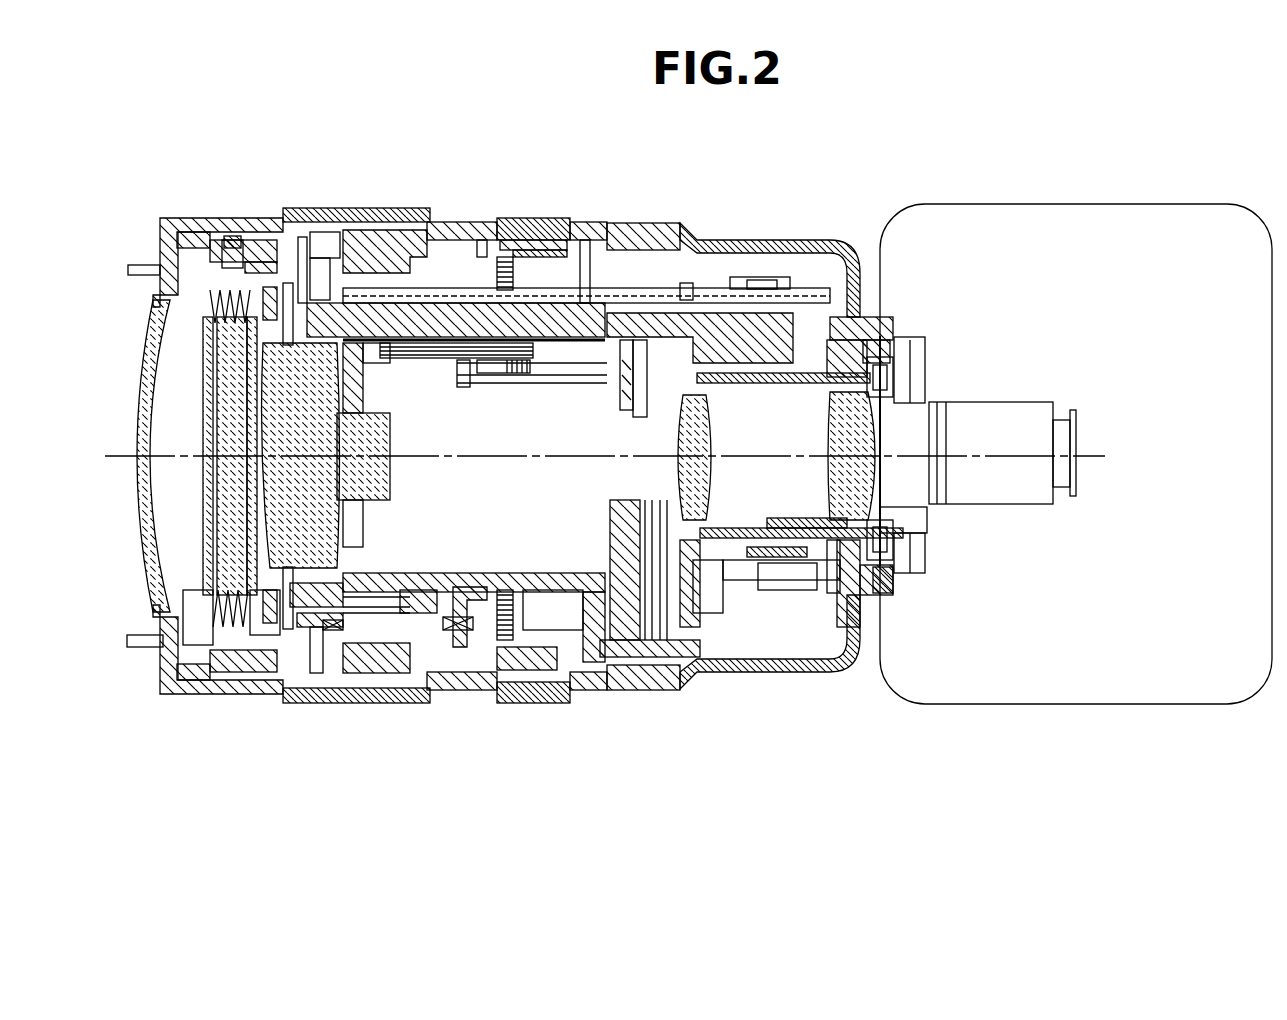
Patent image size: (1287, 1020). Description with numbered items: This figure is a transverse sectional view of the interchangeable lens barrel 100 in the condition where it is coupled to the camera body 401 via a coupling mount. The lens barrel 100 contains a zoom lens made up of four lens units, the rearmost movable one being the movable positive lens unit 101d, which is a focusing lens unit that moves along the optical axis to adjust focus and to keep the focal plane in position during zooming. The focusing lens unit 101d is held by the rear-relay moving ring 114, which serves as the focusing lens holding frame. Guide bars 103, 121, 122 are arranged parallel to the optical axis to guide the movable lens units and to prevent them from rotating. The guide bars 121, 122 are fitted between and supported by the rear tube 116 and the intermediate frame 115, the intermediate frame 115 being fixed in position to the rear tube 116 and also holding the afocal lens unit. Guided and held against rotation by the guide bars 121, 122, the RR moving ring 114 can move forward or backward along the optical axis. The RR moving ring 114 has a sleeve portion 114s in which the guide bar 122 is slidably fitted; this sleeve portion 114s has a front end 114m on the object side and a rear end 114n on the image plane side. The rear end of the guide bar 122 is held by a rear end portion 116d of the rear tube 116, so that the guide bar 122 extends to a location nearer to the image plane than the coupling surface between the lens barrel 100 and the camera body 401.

The lens barrel 100 is at (328, 738).
The movable positive lens unit 101d is at (882, 431).
The guide bar 103 is at (583, 350).
The rear-relay (RR) moving ring 114 is at (842, 390).
The front end 114m is at (768, 593).
The rear end 114n is at (895, 593).
The sleeve portion 114s is at (838, 560).
The intermediate frame 115 is at (683, 237).
The rear tube 116 is at (763, 323).
The rear end portion 116d is at (916, 523).
The guide bar 121 is at (806, 377).
The guide bar 122 is at (740, 540).
The camera body 401 is at (1186, 685).